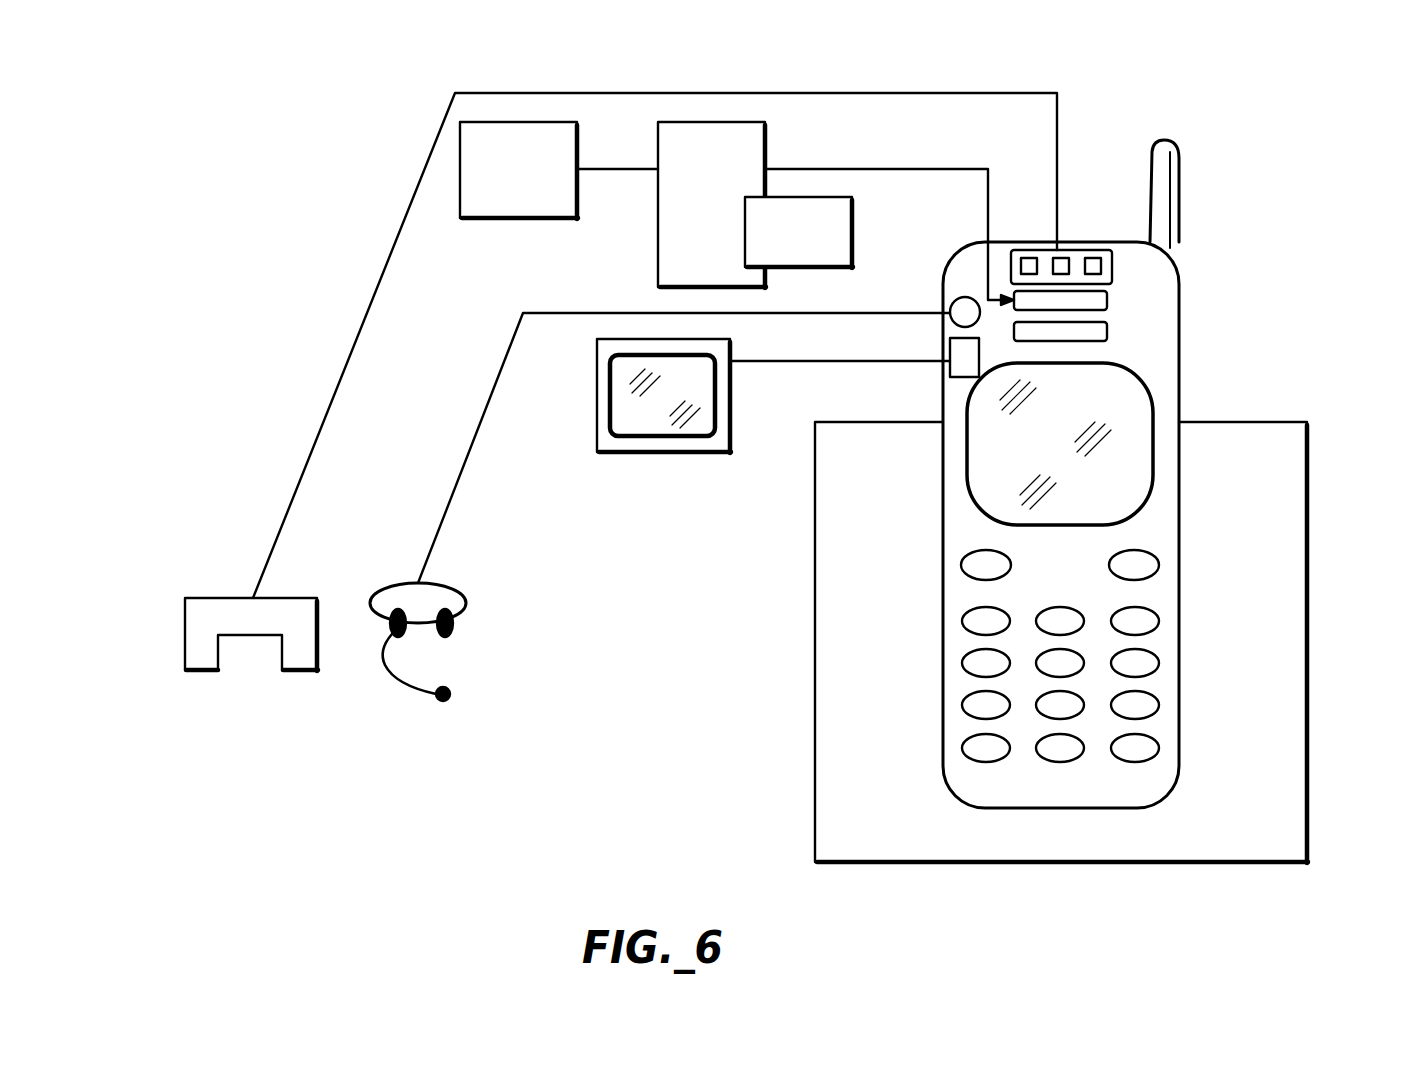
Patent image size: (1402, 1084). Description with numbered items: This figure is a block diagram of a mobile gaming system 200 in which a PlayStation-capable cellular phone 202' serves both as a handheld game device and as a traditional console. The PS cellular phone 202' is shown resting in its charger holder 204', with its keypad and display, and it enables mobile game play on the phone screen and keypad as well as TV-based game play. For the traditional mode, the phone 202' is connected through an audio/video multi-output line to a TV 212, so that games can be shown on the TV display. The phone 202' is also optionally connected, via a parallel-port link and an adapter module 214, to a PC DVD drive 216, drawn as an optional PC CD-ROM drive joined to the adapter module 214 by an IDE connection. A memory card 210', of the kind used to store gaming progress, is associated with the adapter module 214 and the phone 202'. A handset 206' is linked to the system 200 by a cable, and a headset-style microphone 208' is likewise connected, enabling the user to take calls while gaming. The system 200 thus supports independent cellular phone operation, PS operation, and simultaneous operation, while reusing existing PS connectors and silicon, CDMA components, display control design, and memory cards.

The mobile gaming system 200 is at (362, 140).
The PS cellular phone 202' is at (1107, 474).
The holder 204' is at (1106, 642).
The handset 206' is at (229, 634).
The microphone 208' is at (518, 642).
The memory card 210' is at (844, 232).
The TV 212 is at (597, 378).
The adapter module 214 is at (658, 240).
The PC DVD drive 216 is at (577, 190).